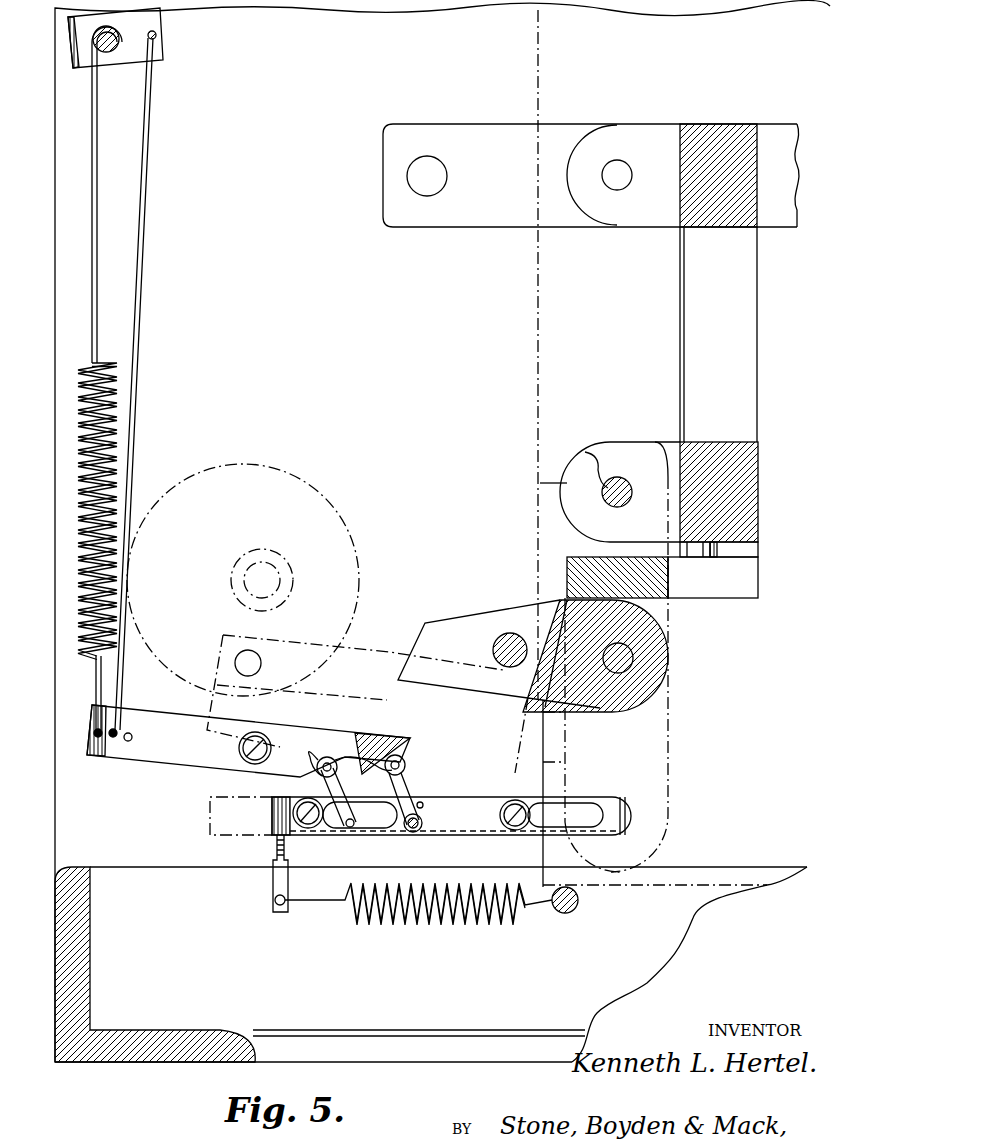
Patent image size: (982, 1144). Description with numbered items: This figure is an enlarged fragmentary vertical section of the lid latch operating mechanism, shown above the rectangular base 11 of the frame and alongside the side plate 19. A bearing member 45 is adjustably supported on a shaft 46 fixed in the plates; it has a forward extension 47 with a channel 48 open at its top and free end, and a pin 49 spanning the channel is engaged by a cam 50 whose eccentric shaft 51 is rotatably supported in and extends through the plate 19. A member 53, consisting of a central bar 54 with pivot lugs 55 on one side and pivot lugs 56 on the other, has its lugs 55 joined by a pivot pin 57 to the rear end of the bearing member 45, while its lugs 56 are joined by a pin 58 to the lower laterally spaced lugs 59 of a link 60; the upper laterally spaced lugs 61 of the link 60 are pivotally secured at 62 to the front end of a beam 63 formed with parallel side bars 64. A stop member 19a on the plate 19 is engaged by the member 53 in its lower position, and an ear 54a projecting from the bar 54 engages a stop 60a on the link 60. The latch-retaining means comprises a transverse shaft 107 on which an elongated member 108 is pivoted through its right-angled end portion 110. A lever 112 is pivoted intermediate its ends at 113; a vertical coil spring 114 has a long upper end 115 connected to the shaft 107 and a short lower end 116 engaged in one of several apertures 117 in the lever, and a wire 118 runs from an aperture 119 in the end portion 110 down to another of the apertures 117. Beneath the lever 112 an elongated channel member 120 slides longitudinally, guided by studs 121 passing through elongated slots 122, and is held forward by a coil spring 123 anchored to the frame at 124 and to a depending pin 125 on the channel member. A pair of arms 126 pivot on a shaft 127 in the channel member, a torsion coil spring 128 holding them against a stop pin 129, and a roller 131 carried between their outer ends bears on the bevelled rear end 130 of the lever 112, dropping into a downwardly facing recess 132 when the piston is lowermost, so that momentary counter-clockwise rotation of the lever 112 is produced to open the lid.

The rectangular base 11 is at (222, 1025).
The plate 19 is at (540, 385).
The stop member 19a is at (567, 755).
The bearing member 45 is at (462, 622).
The shaft 46 is at (493, 650).
The forward extension 47 is at (455, 770).
The channel 48 is at (360, 662).
The pin 49 is at (262, 670).
The cam 50 is at (352, 556).
The eccentric shaft 51 is at (244, 583).
The member 53 is at (574, 538).
The central bar 54 is at (660, 598).
The ear 54a is at (745, 582).
The pivot lugs 55 is at (662, 626).
The pivot lugs 56 is at (645, 455).
The pivot pin 57 is at (628, 665).
The pin 58 is at (581, 458).
The lower laterally spaced lugs 59 is at (536, 485).
The link 60 is at (690, 300).
The stop 60a is at (718, 549).
The upper laterally spaced lugs 61 is at (660, 208).
The pivot 62 is at (622, 172).
The beam 63 is at (591, 169).
The side bars 64 is at (486, 208).
The shaft 107 is at (111, 52).
The elongated member 108 is at (72, 58).
The end portion 110 is at (163, 58).
The lever 112 is at (340, 732).
The pivot 113 is at (248, 762).
The coil spring 114 is at (115, 467).
The upper end 115 is at (96, 258).
The lower end 116 is at (79, 693).
The apertures 117 is at (126, 745).
The wire 118 is at (136, 326).
The aperture 119 is at (157, 36).
The channel member 120 is at (495, 826).
The studs 121 is at (312, 830).
The slots 122 is at (370, 765).
The coil spring 123 is at (418, 917).
The frame anchor 124 is at (580, 905).
The depending pin 125 is at (275, 874).
The arms 126 is at (330, 788).
The pivot shaft 127 is at (408, 832).
The torsion coil spring 128 is at (417, 833).
The stop pin 129 is at (425, 806).
The bevelled rear end 130 is at (425, 742).
The roller 131 is at (385, 754).
The recess 132 is at (278, 744).